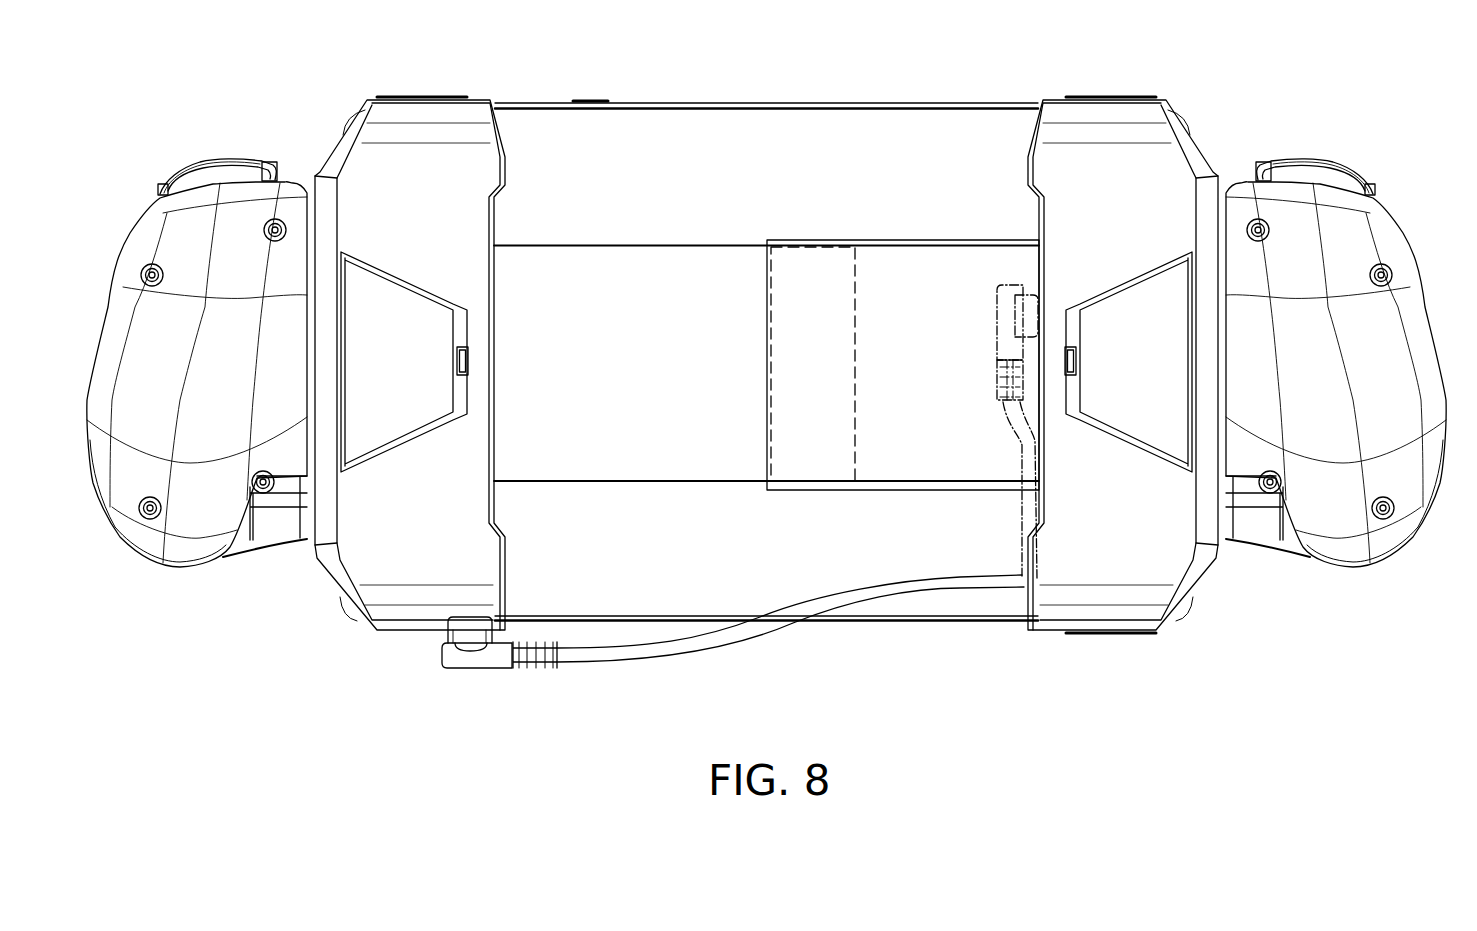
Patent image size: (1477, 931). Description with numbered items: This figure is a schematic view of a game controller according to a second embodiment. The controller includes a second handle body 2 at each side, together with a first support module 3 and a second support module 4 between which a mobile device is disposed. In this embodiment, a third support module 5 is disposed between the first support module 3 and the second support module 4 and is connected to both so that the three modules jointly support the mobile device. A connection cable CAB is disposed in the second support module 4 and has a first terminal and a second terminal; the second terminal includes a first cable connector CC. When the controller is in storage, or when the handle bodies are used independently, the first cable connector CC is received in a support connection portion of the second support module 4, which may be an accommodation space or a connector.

The second handle body 2 is at (131, 240).
The first support module 3 is at (421, 172).
The second support module 4 is at (1115, 170).
The third support module 5 is at (792, 240).
The first cable connector CC is at (470, 660).
The connection cable CAB is at (636, 651).